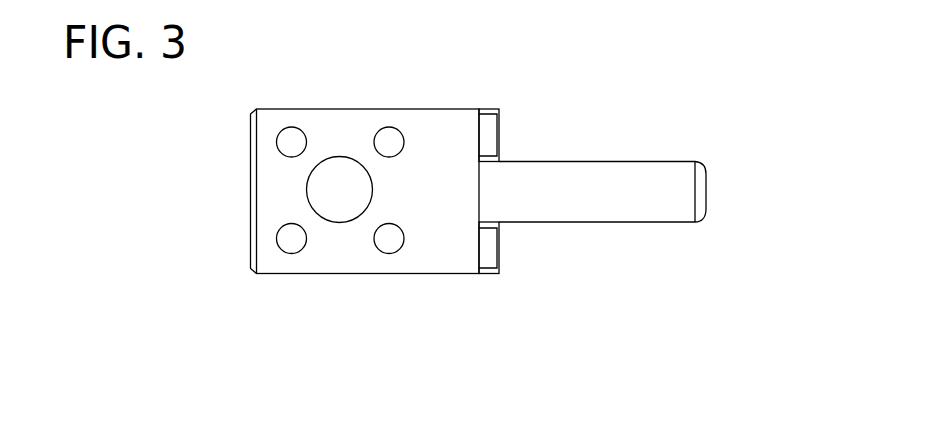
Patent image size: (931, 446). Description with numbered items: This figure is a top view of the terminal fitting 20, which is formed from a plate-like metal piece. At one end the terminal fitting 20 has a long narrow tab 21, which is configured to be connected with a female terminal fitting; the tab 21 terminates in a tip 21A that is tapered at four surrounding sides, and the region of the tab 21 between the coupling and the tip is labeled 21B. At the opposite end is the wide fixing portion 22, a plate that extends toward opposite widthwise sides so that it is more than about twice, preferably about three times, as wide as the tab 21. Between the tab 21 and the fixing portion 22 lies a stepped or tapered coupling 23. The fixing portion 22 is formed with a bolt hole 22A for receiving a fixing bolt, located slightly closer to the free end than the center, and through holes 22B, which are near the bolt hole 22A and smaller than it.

The terminal fitting 20 is at (451, 294).
The tab 21 is at (585, 239).
The tip 21A is at (703, 186).
The shaft cylindrical portion 21B is at (588, 175).
The fixing portion 22 is at (340, 115).
The bolt hole 22A is at (337, 222).
The through holes 22B is at (281, 149).
The coupling 23 is at (488, 132).